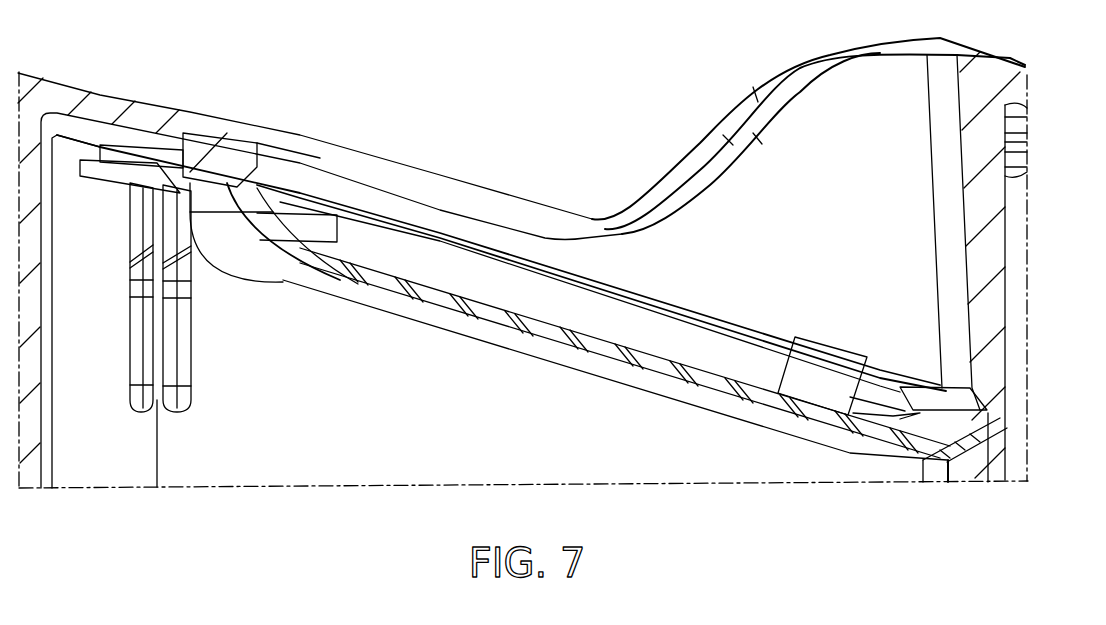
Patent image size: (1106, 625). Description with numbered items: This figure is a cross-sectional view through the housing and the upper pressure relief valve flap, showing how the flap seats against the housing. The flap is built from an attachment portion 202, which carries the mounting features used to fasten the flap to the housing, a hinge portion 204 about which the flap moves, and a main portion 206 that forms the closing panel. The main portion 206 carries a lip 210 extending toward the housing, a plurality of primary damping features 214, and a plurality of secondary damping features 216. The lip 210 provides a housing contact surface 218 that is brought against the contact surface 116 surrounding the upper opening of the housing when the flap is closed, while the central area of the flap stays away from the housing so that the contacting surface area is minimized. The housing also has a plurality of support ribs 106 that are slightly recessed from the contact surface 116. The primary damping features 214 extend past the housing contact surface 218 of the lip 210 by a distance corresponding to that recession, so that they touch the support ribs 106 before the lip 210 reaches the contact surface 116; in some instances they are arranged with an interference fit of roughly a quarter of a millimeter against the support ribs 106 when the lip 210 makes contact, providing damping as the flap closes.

The support ribs 106 is at (757, 141).
The contact surface 116 is at (202, 182).
The attachment portion 202 is at (205, 183).
The hinge portion 204 is at (310, 270).
The main portion 206 is at (565, 338).
The lip 210 is at (960, 437).
The primary damping features 214 is at (827, 363).
The secondary damping features 216 is at (670, 340).
The housing contact surface 218 is at (990, 415).